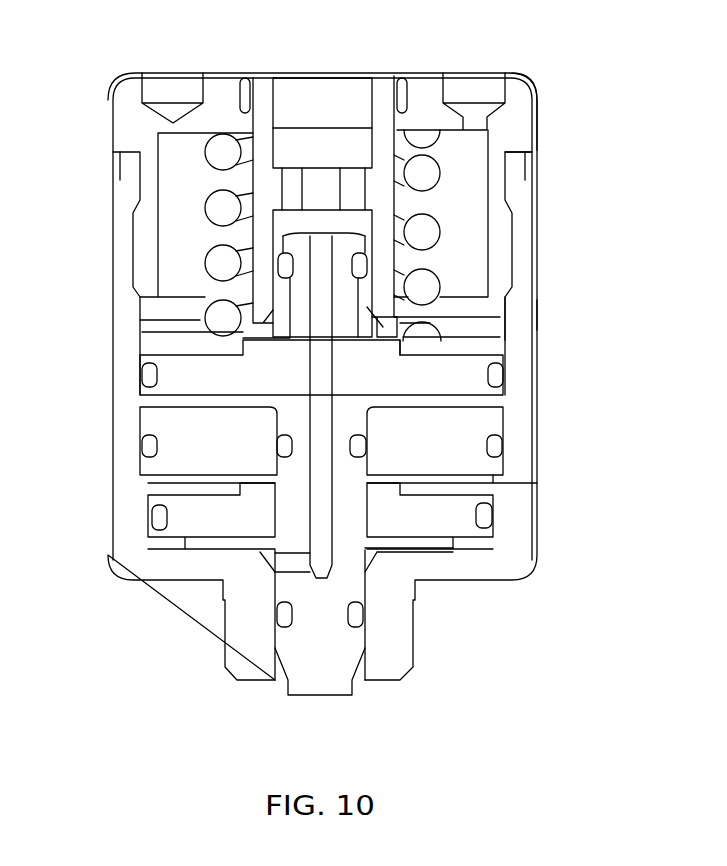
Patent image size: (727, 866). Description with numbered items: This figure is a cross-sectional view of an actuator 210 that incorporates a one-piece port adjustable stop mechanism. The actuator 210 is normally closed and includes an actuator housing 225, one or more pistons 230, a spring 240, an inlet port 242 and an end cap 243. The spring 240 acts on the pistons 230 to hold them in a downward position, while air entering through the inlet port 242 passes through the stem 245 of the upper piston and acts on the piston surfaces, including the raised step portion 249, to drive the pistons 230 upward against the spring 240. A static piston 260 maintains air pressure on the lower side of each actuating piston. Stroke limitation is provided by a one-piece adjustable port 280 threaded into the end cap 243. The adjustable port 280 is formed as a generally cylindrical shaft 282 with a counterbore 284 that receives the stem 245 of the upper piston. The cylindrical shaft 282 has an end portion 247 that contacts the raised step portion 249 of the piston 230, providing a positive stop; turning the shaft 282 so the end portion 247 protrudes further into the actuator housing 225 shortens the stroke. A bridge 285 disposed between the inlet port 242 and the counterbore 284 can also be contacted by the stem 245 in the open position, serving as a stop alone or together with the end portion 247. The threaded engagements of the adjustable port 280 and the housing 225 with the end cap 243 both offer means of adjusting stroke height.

The actuator 210 is at (557, 314).
The actuator housing 225 is at (118, 404).
The pistons 230 is at (503, 353).
The spring 240 is at (210, 258).
The inlet port 242 is at (327, 90).
The end cap 243 is at (526, 116).
The stem 245 is at (350, 310).
The end portion 247 is at (440, 300).
The raised step portion 249 is at (500, 323).
The static piston 260 is at (495, 421).
The one-piece adjustable port 280 is at (389, 87).
The cylindrical shaft 282 is at (382, 199).
The counterbore 284 is at (356, 222).
The bridge 285 is at (352, 183).